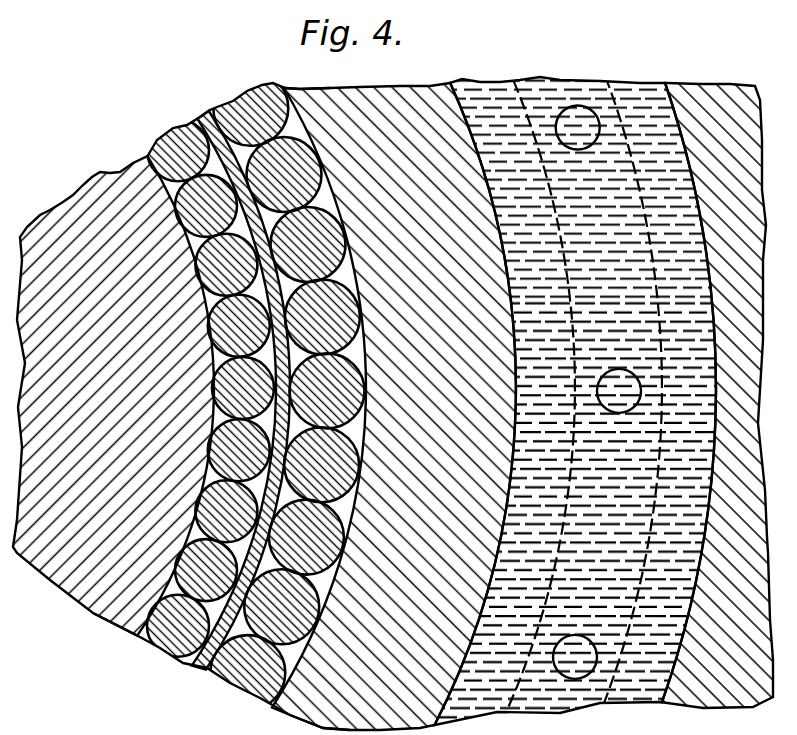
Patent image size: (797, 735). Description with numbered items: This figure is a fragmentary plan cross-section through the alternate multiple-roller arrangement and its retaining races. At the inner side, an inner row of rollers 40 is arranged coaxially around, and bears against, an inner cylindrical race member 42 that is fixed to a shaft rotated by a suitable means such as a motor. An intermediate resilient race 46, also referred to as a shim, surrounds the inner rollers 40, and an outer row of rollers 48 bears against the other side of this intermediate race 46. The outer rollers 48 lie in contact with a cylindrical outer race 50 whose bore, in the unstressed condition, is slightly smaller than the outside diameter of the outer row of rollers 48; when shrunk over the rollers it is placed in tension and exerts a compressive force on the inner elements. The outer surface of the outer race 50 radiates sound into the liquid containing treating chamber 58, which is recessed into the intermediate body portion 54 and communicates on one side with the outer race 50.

The inner cylindrical race member 42 is at (83, 200).
The inner row of rollers 40 is at (170, 147).
The intermediate resilient race 46 is at (203, 112).
The outer row of rollers 48 is at (240, 108).
The cylindrical outer race 50 is at (335, 100).
The liquid containing treating chamber 58 is at (540, 90).
The intermediate body portion 54 is at (698, 95).